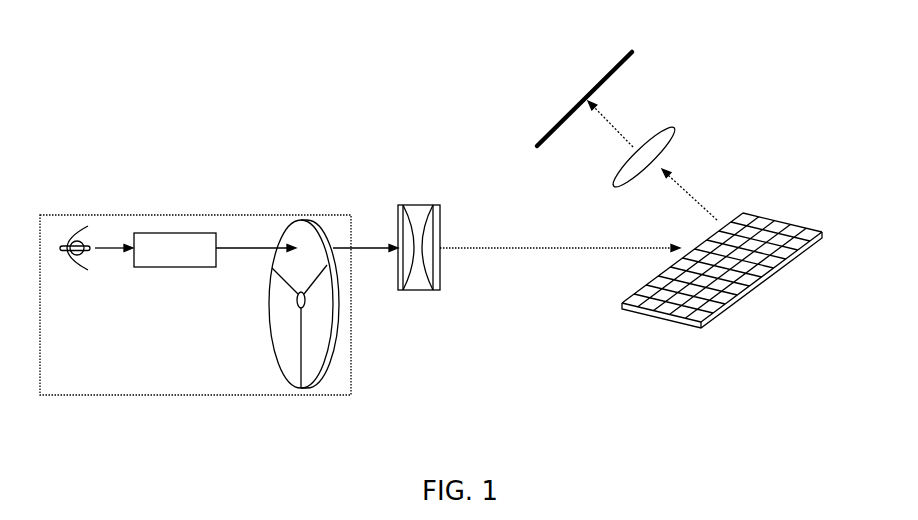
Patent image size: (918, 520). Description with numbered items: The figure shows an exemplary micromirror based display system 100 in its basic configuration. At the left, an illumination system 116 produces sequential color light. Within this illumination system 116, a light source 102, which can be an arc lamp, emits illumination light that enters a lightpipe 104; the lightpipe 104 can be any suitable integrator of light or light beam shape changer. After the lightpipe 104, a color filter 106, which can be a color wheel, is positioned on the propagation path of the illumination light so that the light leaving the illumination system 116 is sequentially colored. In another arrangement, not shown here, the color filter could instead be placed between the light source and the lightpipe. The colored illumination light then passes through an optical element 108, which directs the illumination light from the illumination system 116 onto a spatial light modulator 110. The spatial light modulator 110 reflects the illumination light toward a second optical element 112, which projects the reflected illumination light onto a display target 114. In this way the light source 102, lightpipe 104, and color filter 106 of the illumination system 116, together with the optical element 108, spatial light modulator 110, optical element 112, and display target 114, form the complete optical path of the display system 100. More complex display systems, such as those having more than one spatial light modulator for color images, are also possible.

The display system 100 is at (306, 128).
The light source 102 is at (68, 220).
The lightpipe 104 is at (175, 233).
The color filter 106 is at (307, 217).
The optical element 108 is at (424, 205).
The spatial light modulator 110 is at (757, 205).
The optical element 112 is at (670, 127).
The display target 114 is at (602, 54).
The illumination system 116 is at (195, 395).